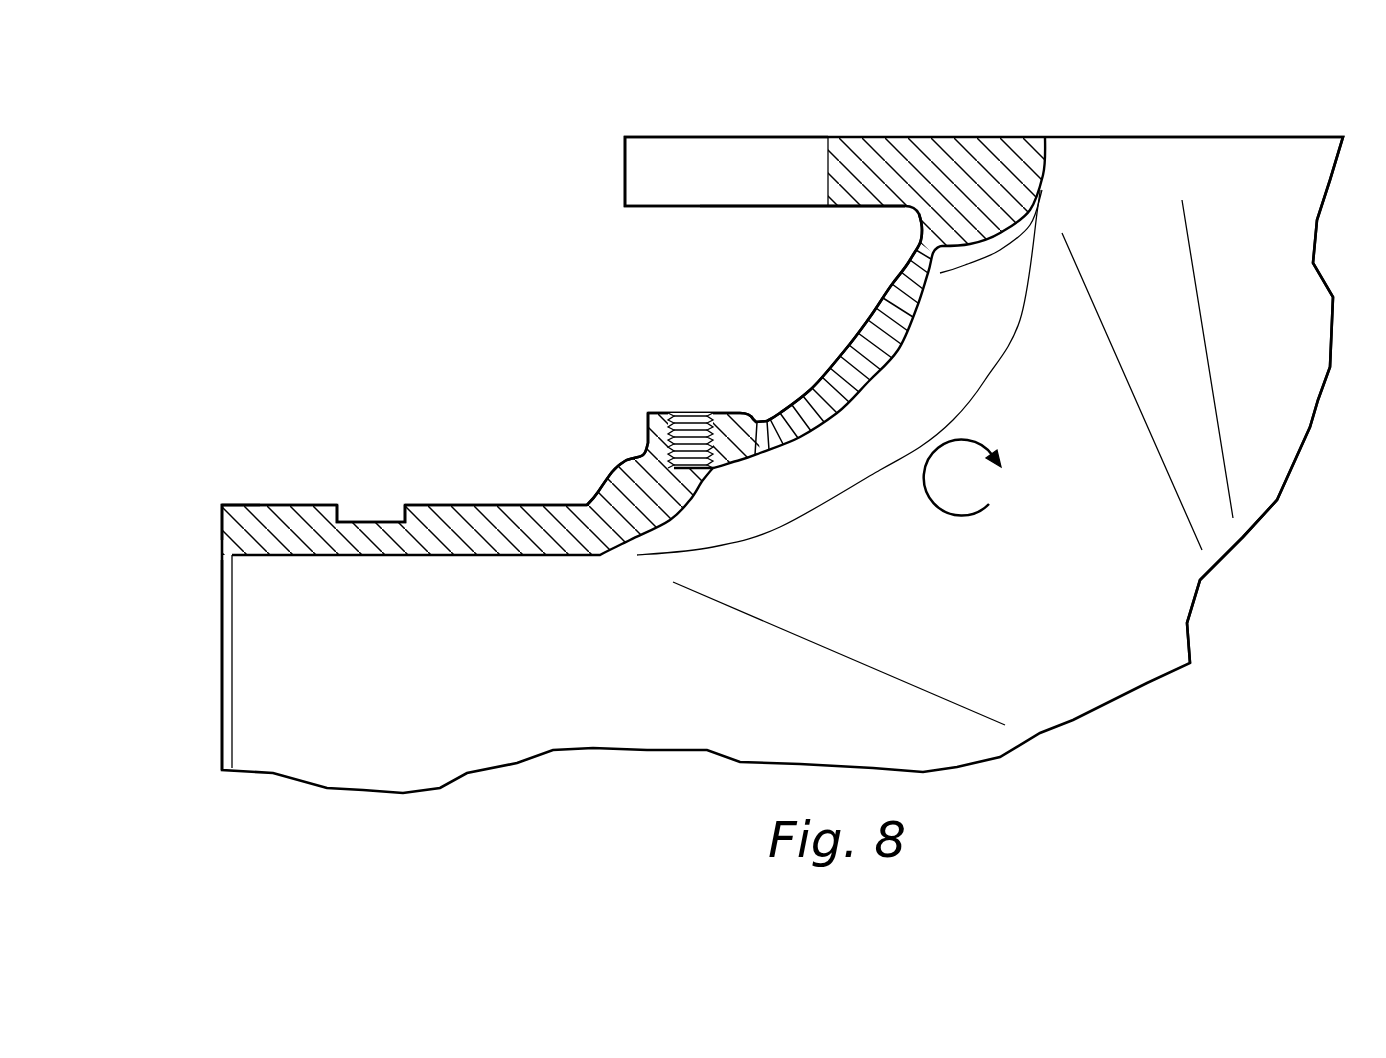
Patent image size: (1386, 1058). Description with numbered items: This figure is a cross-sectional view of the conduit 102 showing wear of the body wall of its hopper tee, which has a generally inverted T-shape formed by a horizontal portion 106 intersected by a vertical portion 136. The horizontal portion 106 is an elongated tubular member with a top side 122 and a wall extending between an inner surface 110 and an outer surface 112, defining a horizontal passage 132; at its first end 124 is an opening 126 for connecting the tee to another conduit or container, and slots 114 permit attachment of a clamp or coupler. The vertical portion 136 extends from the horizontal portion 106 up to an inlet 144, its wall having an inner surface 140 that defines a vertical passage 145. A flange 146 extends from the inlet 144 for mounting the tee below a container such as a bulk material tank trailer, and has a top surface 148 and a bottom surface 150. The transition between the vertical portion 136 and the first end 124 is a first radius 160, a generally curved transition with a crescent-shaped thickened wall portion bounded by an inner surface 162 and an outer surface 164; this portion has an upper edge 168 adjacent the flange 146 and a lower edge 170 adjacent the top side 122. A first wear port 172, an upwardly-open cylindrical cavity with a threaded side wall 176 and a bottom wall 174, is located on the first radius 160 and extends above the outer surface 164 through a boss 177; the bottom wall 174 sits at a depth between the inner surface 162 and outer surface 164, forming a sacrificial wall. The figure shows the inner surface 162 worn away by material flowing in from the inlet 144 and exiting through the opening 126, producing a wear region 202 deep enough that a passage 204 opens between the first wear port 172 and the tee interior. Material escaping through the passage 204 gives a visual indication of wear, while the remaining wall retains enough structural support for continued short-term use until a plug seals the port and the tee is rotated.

The conduit 102 is at (482, 287).
The horizontal portion 106 is at (378, 442).
The inner surface 110 is at (348, 709).
The outer surface 112 is at (260, 491).
The slots 114 is at (366, 520).
The top side 122 is at (415, 503).
The first end 124 is at (222, 505).
The opening 126 is at (222, 595).
The horizontal passage 132 is at (485, 555).
The vertical portion 136 is at (708, 279).
The inner surface 140 is at (1124, 299).
The inlet 144 is at (1047, 137).
The vertical passage 145 is at (1063, 210).
The flange 146 is at (625, 137).
The top surface 148 is at (864, 122).
The bottom surface 150 is at (754, 225).
The first radius 160 is at (678, 300).
The inner surface 162 is at (913, 343).
The outer surface 164 is at (832, 346).
The upper edge 168 is at (913, 253).
The lower edge 170 is at (587, 502).
The first wear port 172 is at (650, 413).
The bottom wall 174 is at (690, 468).
The threaded side wall 176 is at (680, 413).
The boss 177 is at (645, 450).
The wear region 202 is at (760, 500).
The passage 204 is at (713, 468).